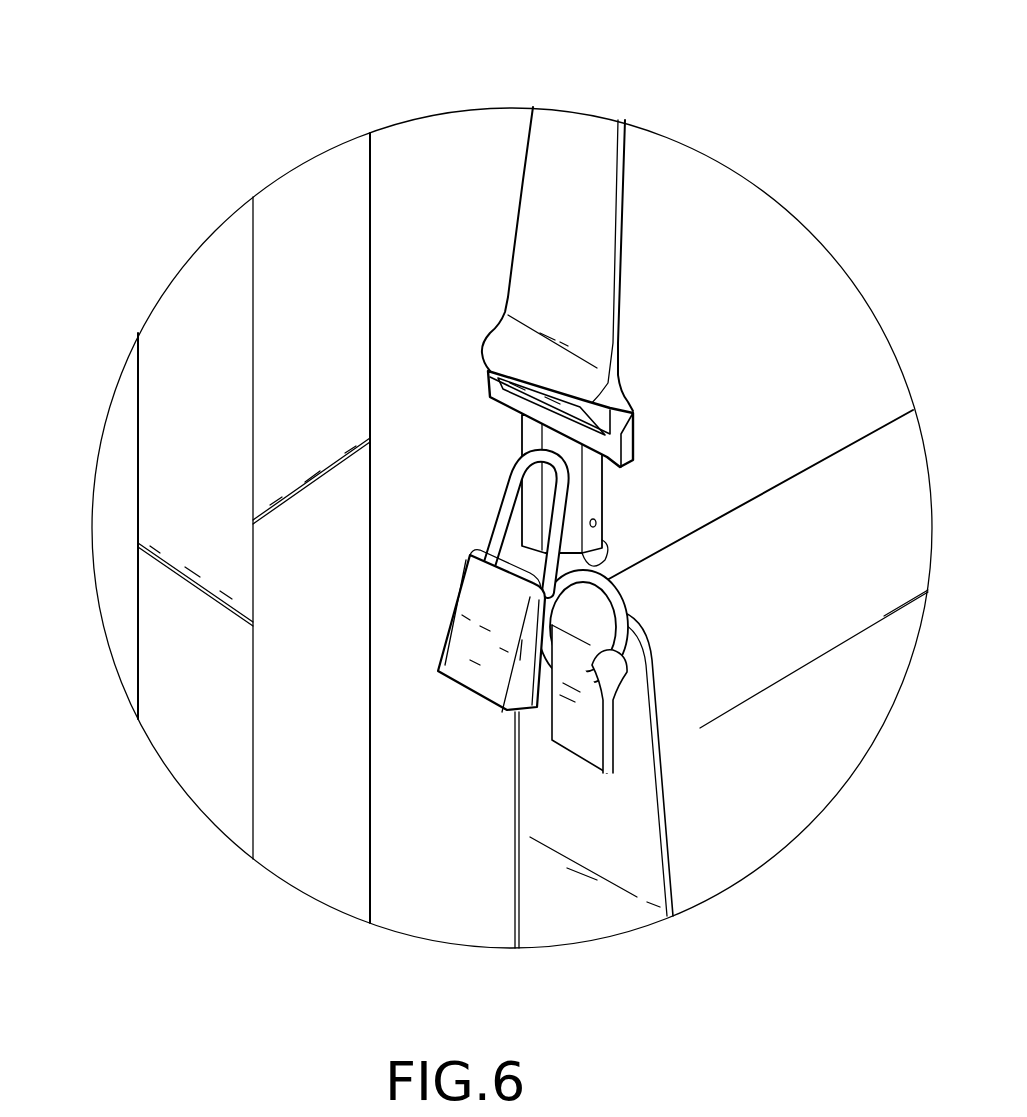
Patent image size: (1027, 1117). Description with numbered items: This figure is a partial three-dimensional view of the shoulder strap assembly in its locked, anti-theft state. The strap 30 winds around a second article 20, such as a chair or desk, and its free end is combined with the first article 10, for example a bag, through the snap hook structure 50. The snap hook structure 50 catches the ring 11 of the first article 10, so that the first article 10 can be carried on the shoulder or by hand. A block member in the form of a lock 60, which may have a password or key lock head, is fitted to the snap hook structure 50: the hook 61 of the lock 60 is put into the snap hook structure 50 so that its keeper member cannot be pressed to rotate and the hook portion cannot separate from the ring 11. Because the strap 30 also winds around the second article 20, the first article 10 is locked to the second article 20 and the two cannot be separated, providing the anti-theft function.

The first article 10 is at (797, 748).
The ring 11 is at (607, 612).
The second article 20 is at (160, 505).
The strap 30 is at (543, 202).
The snap hook structure 50 is at (643, 423).
The lock 60 is at (453, 574).
The hook 61 is at (493, 512).